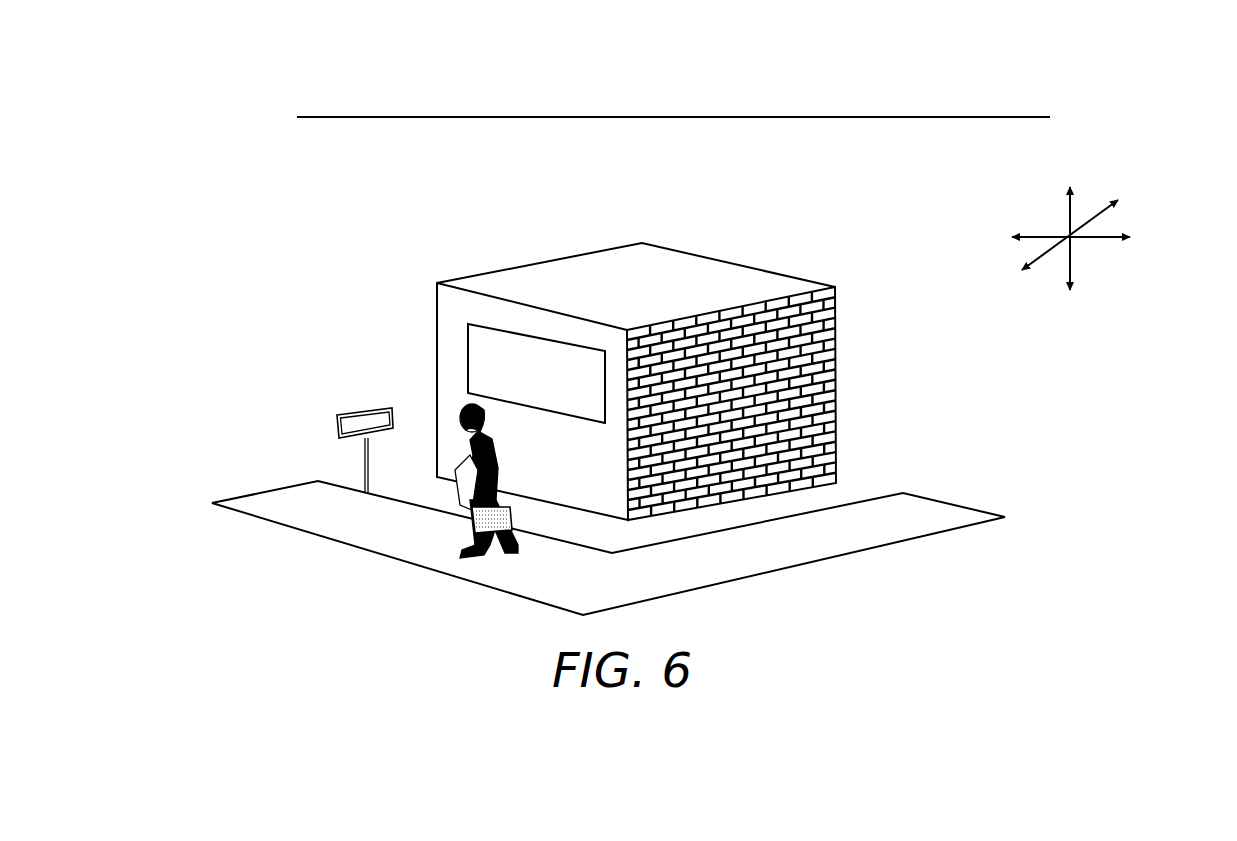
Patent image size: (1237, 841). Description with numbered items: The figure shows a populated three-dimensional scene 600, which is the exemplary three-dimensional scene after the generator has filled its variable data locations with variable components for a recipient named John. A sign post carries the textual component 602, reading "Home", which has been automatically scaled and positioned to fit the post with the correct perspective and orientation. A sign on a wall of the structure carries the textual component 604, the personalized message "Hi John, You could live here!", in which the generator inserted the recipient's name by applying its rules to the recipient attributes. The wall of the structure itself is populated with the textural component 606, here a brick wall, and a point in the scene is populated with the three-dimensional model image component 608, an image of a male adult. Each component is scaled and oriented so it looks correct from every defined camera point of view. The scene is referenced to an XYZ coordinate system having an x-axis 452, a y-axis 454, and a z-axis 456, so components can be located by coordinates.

The populated 3D scene 600 is at (240, 94).
The textual component 602 is at (348, 406).
The textual component 604 is at (460, 360).
The textural component 606 is at (840, 377).
The 3D model image component 608 is at (462, 520).
The x-axis 452 is at (1150, 236).
The y-axis 454 is at (1067, 158).
The z-axis 456 is at (1141, 193).